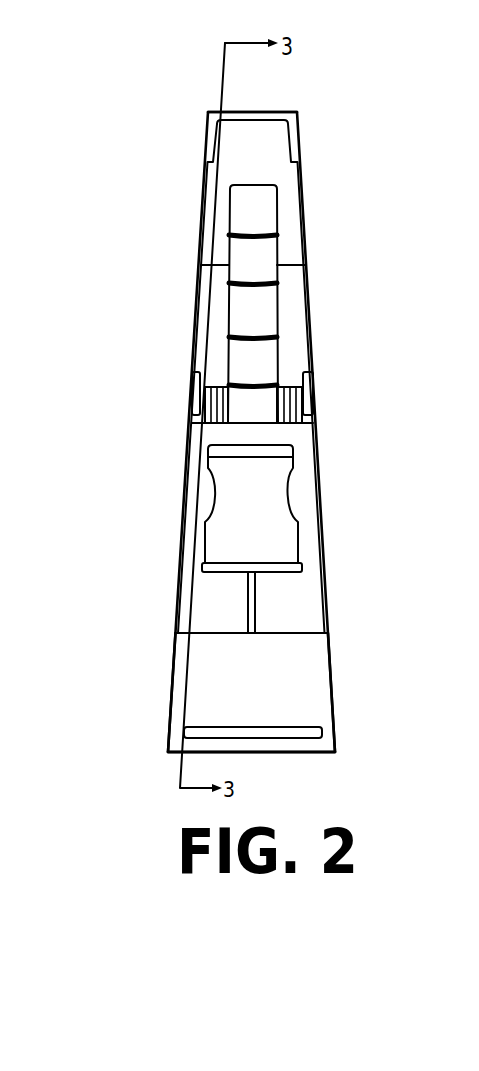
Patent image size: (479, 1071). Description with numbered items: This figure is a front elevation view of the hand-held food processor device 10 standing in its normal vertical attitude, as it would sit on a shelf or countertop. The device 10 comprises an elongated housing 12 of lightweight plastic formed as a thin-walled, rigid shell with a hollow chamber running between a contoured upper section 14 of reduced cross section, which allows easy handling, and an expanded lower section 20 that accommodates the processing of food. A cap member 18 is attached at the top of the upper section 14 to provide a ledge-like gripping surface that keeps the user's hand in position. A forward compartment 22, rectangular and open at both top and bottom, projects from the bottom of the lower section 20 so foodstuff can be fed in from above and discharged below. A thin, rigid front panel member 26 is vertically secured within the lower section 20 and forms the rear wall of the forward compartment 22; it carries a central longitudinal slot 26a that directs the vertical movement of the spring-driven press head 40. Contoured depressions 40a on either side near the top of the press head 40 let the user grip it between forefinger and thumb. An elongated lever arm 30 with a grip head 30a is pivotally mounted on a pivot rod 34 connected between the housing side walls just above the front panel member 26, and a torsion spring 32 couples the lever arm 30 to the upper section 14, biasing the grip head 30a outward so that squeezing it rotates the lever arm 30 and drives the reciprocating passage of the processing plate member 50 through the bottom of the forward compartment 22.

The food processor device 10 is at (155, 482).
The housing 12 is at (324, 398).
The upper section 14 is at (190, 249).
The cap member 18 is at (297, 111).
The lower section 20 is at (167, 612).
The forward compartment 22 is at (333, 688).
The front panel member 26 is at (327, 592).
The slot 26a is at (258, 613).
The lever arm 30 is at (298, 195).
The grip head 30a is at (296, 364).
The torsion spring 32 is at (305, 318).
The pivot rod 34 is at (192, 400).
The press head 40 is at (325, 541).
The contoured depressions 40a is at (290, 492).
The processing plate member 50 is at (322, 730).